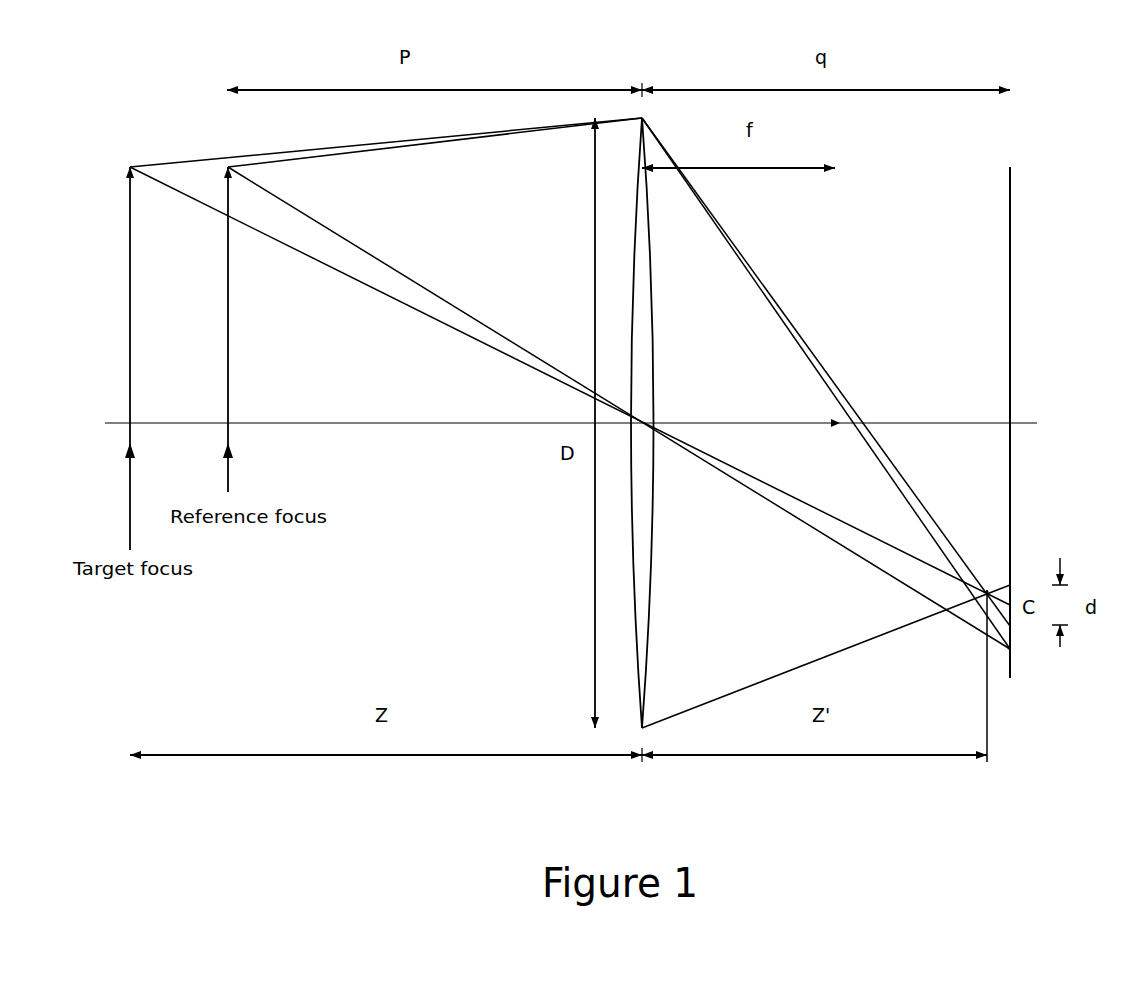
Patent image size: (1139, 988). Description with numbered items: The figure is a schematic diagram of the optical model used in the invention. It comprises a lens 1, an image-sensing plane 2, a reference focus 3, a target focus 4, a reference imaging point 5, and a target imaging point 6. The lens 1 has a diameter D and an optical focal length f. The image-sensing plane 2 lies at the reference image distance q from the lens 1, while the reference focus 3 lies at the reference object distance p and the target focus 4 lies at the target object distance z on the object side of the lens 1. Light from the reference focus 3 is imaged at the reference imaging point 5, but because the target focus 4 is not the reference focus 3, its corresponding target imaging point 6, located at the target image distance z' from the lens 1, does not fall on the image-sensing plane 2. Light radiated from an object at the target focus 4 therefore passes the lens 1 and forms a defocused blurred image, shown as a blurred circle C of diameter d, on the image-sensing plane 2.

The lens 1 is at (1010, 216).
The image-sensing plane 2 is at (645, 372).
The reference focus 3 is at (228, 167).
The target focus 4 is at (130, 167).
The reference imaging point 5 is at (1008, 647).
The target imaging point 6 is at (987, 588).